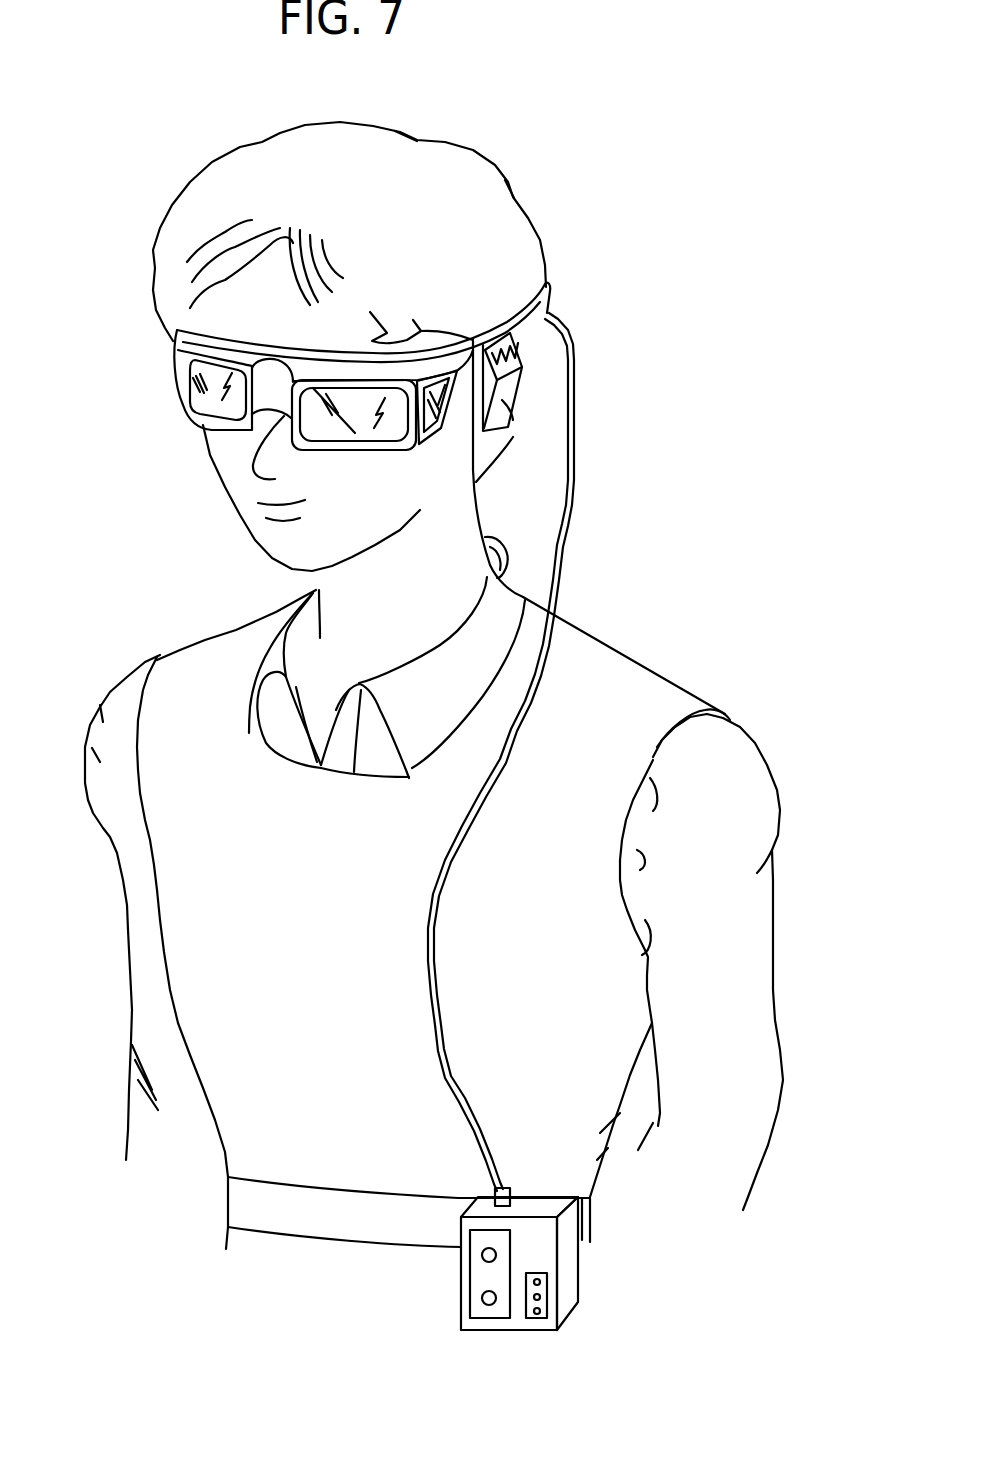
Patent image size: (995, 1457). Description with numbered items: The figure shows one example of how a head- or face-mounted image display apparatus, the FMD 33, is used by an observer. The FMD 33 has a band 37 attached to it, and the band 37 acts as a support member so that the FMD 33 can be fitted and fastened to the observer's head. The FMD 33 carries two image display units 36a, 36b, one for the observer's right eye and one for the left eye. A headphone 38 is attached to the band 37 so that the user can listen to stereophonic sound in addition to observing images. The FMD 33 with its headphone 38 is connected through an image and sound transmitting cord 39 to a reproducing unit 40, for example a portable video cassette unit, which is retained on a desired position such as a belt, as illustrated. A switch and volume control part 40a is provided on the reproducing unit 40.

The FMD 33 is at (387, 362).
The image display unit for the observer's right eye 36a is at (203, 386).
The image display unit for the observer's left eye 36b is at (327, 430).
The band 37 is at (540, 303).
The headphone 38 is at (513, 420).
The image and sound transmitting cord 39 is at (562, 565).
The reproducing unit 40 is at (460, 1287).
The switch and volume control part 40a is at (540, 1297).